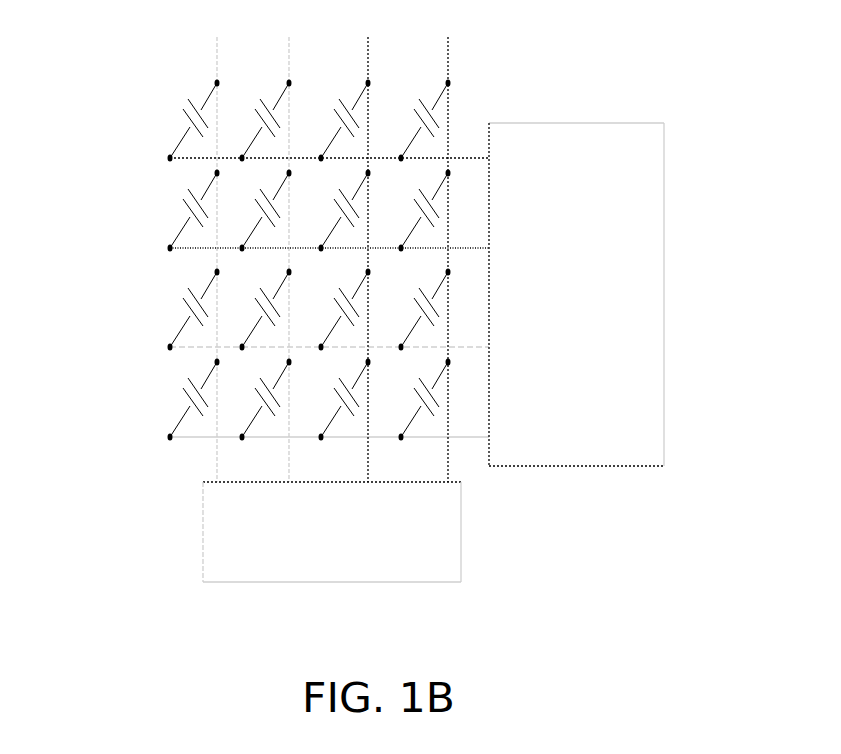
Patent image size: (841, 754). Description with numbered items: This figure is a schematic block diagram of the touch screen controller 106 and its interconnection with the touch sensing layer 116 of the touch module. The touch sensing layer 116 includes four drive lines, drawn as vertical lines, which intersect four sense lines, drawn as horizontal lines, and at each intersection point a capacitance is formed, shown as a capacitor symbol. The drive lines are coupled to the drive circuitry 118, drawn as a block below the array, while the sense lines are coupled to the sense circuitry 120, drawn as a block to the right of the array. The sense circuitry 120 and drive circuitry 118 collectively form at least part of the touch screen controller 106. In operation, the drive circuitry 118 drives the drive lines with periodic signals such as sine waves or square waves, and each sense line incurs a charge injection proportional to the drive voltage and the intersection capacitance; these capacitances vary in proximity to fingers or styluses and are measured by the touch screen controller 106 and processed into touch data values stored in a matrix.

The touch screen controller 106 is at (541, 537).
The touch sensing layer 116 is at (120, 49).
The drive circuitry 118 is at (270, 583).
The sense circuitry 120 is at (664, 237).